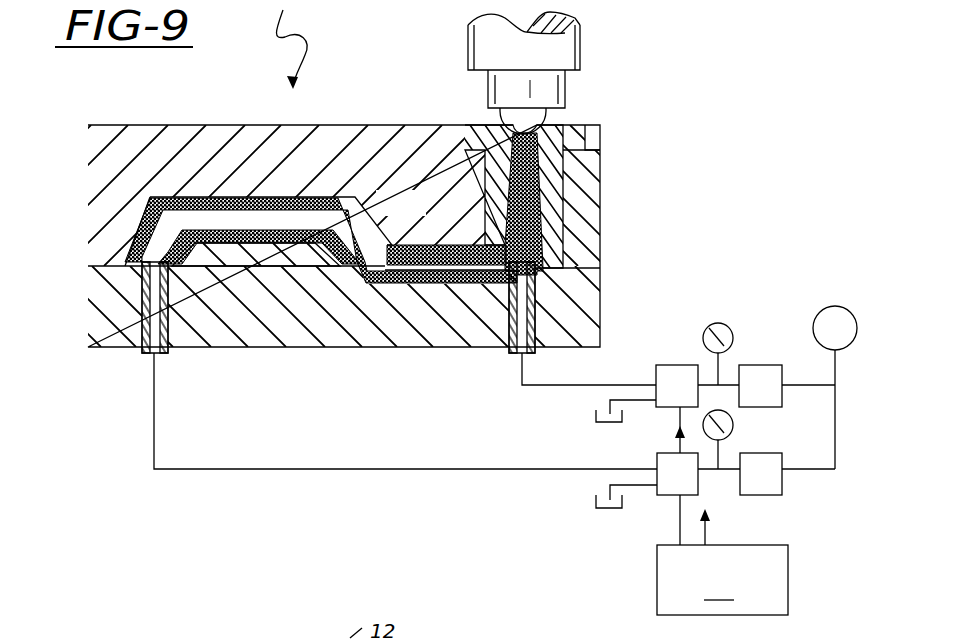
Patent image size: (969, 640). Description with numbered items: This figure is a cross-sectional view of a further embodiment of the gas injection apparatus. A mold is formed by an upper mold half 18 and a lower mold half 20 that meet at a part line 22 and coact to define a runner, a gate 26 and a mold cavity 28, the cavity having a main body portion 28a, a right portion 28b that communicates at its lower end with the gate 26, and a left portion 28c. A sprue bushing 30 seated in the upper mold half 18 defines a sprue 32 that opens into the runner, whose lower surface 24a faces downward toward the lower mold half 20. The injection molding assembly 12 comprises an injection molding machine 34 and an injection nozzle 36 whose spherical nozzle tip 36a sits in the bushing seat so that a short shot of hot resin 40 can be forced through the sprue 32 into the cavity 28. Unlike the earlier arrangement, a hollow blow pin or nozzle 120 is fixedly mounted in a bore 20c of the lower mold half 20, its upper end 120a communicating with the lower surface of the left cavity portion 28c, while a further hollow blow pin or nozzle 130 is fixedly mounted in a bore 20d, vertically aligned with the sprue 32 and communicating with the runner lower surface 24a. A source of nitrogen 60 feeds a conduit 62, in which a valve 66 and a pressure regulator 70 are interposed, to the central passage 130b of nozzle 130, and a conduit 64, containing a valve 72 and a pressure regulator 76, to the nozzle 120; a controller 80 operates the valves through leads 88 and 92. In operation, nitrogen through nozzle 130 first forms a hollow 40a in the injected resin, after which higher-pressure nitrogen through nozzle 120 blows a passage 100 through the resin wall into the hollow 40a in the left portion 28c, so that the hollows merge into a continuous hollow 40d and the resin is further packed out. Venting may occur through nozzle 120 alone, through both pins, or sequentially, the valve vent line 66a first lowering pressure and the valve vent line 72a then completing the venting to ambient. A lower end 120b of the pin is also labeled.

The injection molding assembly 12 is at (471, 70).
The upper mold half 18 is at (602, 147).
The lower mold half 20 is at (602, 284).
The bore 20c is at (207, 348).
The bore 20d is at (602, 303).
The part line 22 is at (603, 242).
The lower surface of runner 24a is at (408, 283).
The gate 26 is at (345, 320).
The mold cavity 28 is at (253, 190).
The main body portion of cavity 28a is at (330, 226).
The right portion of cavity 28b is at (376, 236).
The left portion of cavity 28c is at (140, 222).
The sprue bushing 30 is at (570, 183).
The sprue 32 is at (533, 203).
The injection molding machine 34 is at (582, 34).
The injection nozzle 36 is at (566, 82).
The spherical nozzle tip 36a is at (550, 115).
The hot resin 40 is at (195, 212).
The gas passage or hollow 40a is at (372, 232).
The continuous hollow 40d is at (148, 235).
The source of nitrogen 60 is at (836, 306).
The conduit 62 is at (545, 387).
The conduit 64 is at (375, 472).
The valve 66 is at (677, 365).
The valve vent line 66a is at (628, 405).
The pressure regulator 70 is at (760, 365).
The valve 72 is at (662, 497).
The valve vent line 72a is at (598, 490).
The pressure regulator 76 is at (766, 453).
The controller 80 is at (722, 580).
The lead 88 is at (755, 516).
The lead 92 is at (678, 527).
The passage 100 is at (200, 265).
The hollow blow pin or nozzle 120 is at (150, 356).
The upper end of nozzle 120a is at (140, 337).
The gas pin end 120b is at (140, 348).
The hollow blow pin or nozzle 130 is at (487, 285).
The central passage 130b is at (490, 343).